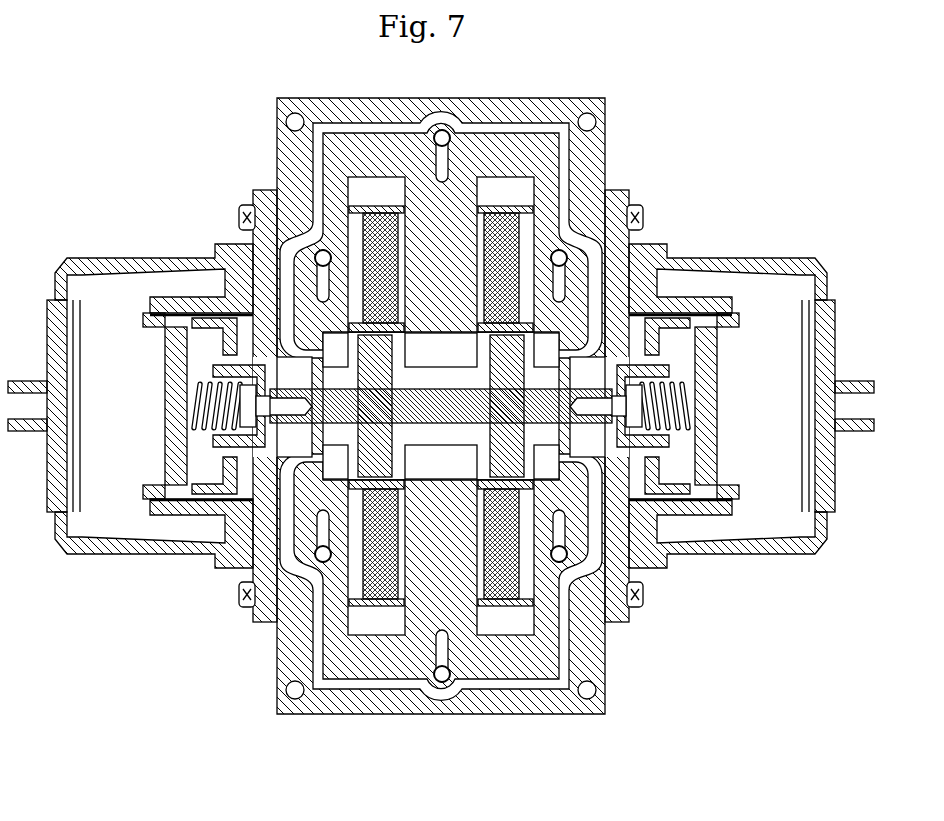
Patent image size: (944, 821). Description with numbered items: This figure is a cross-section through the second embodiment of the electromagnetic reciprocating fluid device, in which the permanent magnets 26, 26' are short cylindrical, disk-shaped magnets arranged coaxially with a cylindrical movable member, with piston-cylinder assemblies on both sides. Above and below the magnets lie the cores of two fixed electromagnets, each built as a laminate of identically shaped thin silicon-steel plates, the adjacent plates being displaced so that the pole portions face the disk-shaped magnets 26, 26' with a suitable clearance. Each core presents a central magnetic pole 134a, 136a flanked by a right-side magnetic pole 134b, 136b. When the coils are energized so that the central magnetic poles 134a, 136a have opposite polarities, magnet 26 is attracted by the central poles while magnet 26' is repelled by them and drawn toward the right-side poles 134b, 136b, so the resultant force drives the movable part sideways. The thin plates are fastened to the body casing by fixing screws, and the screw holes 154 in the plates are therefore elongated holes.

The central magnetic pole 134a is at (443, 250).
The right-side magnetic pole 134b is at (345, 240).
The central magnetic pole 136a is at (443, 588).
The right-side magnetic pole 136b is at (323, 553).
The screw hole 154 is at (255, 613).
The permanent magnet 26 is at (142, 385).
The permanent magnet 26' is at (739, 385).